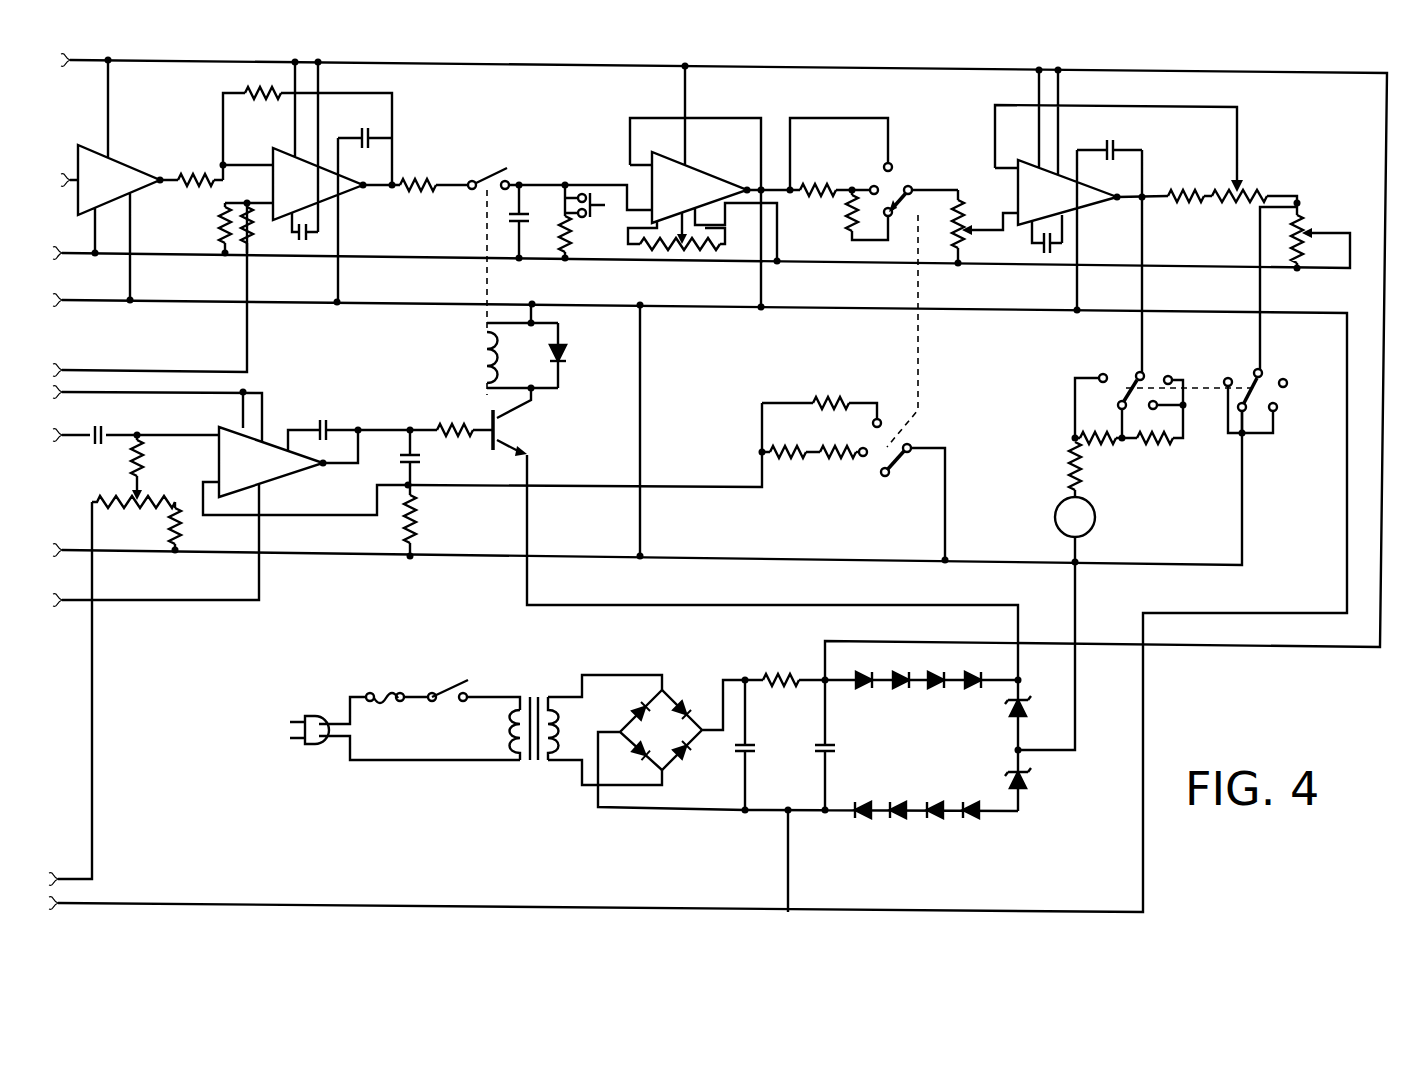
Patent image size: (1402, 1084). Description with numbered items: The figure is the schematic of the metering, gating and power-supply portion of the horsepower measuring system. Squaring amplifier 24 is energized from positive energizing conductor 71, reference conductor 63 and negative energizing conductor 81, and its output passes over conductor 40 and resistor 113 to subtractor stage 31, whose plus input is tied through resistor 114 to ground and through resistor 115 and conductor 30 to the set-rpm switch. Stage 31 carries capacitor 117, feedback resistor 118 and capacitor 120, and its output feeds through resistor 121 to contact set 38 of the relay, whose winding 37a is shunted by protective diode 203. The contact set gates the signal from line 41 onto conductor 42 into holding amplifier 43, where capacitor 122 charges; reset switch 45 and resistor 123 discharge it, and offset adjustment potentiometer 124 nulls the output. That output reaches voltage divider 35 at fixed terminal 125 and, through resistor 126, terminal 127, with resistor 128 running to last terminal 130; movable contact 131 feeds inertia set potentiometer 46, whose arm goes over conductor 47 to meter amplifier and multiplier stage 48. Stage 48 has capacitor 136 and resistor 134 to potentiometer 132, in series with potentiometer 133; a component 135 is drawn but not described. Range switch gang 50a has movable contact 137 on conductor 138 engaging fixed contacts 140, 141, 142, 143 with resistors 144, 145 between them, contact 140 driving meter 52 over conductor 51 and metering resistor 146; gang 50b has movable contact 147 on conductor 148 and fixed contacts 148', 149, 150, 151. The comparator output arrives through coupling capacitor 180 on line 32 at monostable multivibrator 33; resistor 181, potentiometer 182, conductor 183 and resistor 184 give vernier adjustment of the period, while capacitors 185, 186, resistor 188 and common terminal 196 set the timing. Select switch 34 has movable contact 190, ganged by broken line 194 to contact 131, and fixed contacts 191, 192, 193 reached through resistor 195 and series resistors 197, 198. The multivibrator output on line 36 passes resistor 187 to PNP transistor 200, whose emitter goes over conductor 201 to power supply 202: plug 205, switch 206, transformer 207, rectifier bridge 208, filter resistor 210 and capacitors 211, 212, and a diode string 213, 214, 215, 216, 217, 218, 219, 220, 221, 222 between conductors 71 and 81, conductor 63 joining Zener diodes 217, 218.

The squaring amplifier 24 is at (96, 138).
The conductor 30 is at (118, 370).
The subtractor stage 31 is at (271, 135).
The line 32 is at (184, 434).
The monostable multivibrator stage 33 is at (313, 499).
The select delta t switch 34 is at (963, 420).
The voltage divider stage 35 is at (902, 194).
The line 36 is at (410, 428).
The relay winding 37a is at (482, 358).
The contact set 38 is at (510, 180).
The conductor 40 is at (160, 178).
The line 41 is at (468, 180).
The conductor 42 is at (618, 181).
The holding amplifier stage 43 is at (736, 162).
The reset switch 45 is at (591, 192).
The inertia set potentiometer 46 is at (946, 228).
The conductor 47 is at (976, 236).
The meter amplifier and multiplier stage 48 is at (1026, 146).
The switch gang 50a is at (1060, 415).
The switch gang 50b is at (1304, 478).
The conductor 51 is at (1073, 439).
The meter 52 is at (1086, 531).
The ground conductor 63 is at (102, 254).
The positive energizing conductor 71 is at (112, 394).
The negative energizing conductor 81 is at (102, 304).
The resistor 113 is at (191, 170).
The resistor 114 is at (207, 228).
The resistor 115 is at (262, 227).
The capacitor 117 is at (300, 244).
The feedback resistor 118 is at (306, 127).
The capacitor 120 is at (365, 129).
The resistor 121 is at (414, 174).
The capacitor 122 is at (506, 216).
The resistor 123 is at (582, 237).
The offset adjustment potentiometer 124 is at (682, 250).
The fixed terminal 125 is at (891, 162).
The resistor 126 is at (808, 178).
The fixed terminal 127 is at (872, 185).
The fixed resistor 128 is at (848, 215).
The terminal 130 is at (913, 188).
The movable contact 131 is at (900, 202).
The potentiometer 132 is at (1254, 191).
The potentiometer 133 is at (1298, 285).
The resistor 134 is at (1164, 185).
The capacitor 135 is at (1109, 140).
The capacitor 136 is at (1041, 254).
The movable contact 137 is at (1124, 389).
The conductor 138 is at (1142, 298).
The fixed contact 140 is at (1100, 376).
The fixed contact 141 is at (1120, 406).
The fixed contact 142 is at (1144, 372).
The fixed contact 143 is at (1171, 378).
The resistor 144 is at (1106, 449).
The resistor 145 is at (1155, 449).
The metering resistor 146 is at (1059, 469).
The movable contact 147 is at (1266, 383).
The conductor 148 is at (1288, 346).
The fixed contact 148' is at (1237, 380).
The fixed contact 149 is at (1232, 411).
The fixed contact 150 is at (1278, 409).
The fixed contact 151 is at (1284, 380).
The coupling capacitor 180 is at (113, 448).
The resistor 181 is at (152, 467).
The potentiometer 182 is at (133, 513).
The conductor 183 is at (92, 816).
The resistor 184 is at (192, 528).
The capacitor 185 is at (349, 433).
The capacitor 186 is at (426, 457).
The resistor 187 is at (451, 418).
The resistor 188 is at (428, 522).
The movable contact 190 is at (894, 463).
The fixed contact 191 is at (882, 418).
The fixed contact 192 is at (862, 448).
The fixed contact 193 is at (883, 474).
The broken line 194 is at (917, 322).
The resistor 195 is at (819, 397).
The common terminal 196 is at (415, 488).
The resistor 197 is at (791, 463).
The resistor 198 is at (839, 463).
The PNP transistor 200 is at (516, 422).
The conductor 201 is at (690, 604).
The power supply circuit 202 is at (1018, 680).
The protective diode 203 is at (564, 354).
The three-prong plug 205 is at (405, 725).
The switch 206 is at (443, 684).
The transformer 207 is at (586, 729).
The rectifier bridge 208 is at (671, 745).
The resistor 210 is at (785, 693).
The capacitor 211 is at (881, 796).
The capacitor 212 is at (763, 747).
The diode 213 is at (921, 692).
The diode 214 is at (901, 673).
The diode 215 is at (939, 692).
The diode 216 is at (971, 673).
The Zener diode 217 is at (1034, 725).
The Zener diode 218 is at (1034, 780).
The diode 219 is at (976, 825).
The diode 220 is at (936, 800).
The diode 221 is at (901, 825).
The diode 222 is at (866, 800).